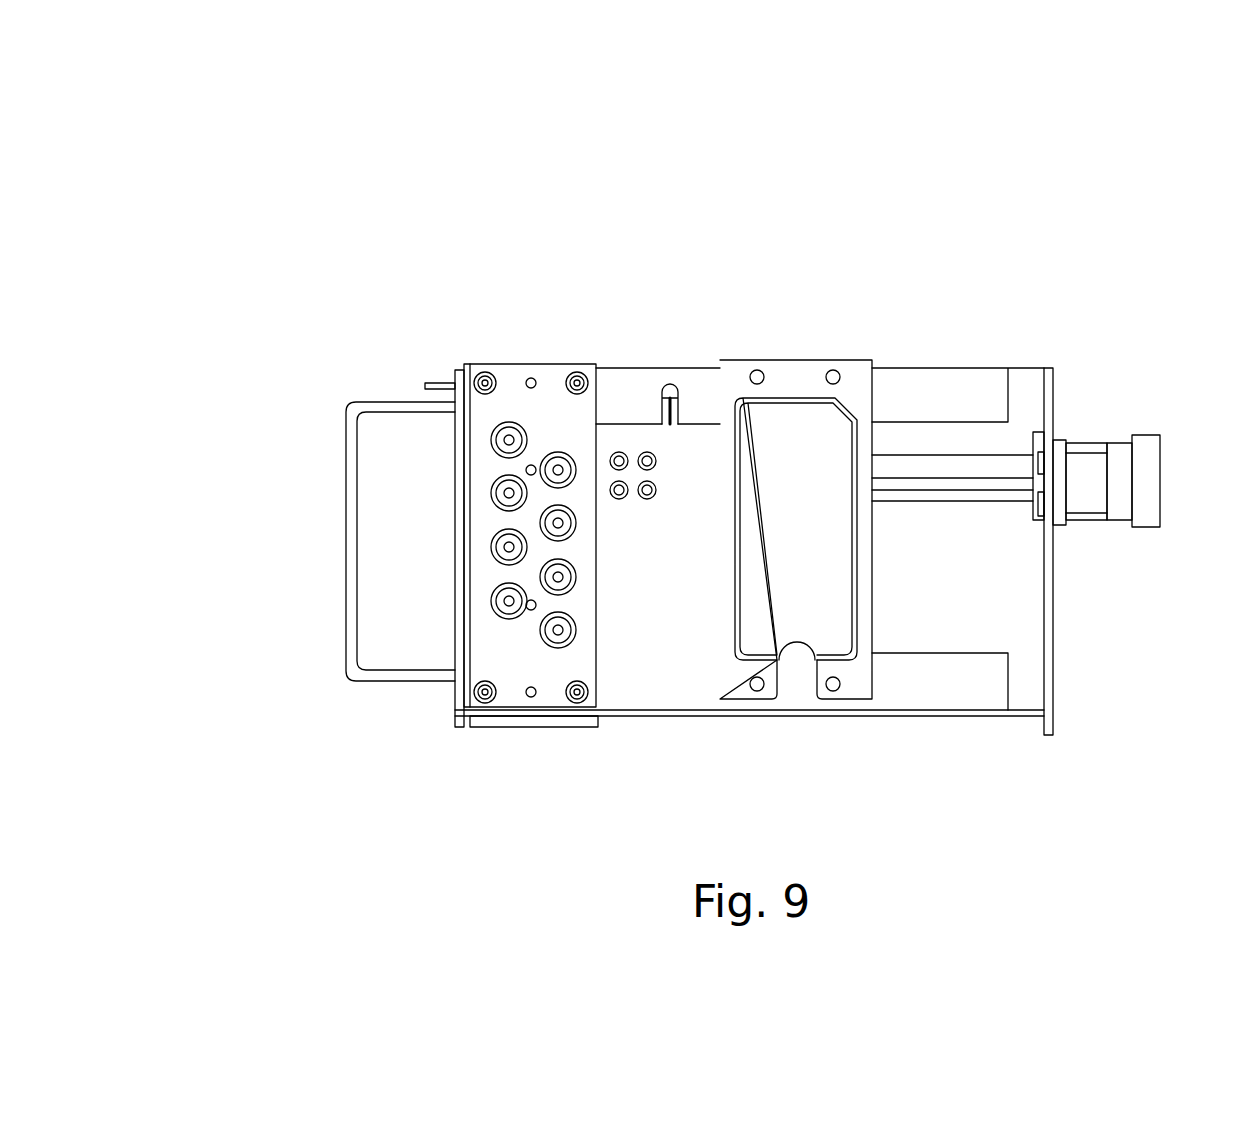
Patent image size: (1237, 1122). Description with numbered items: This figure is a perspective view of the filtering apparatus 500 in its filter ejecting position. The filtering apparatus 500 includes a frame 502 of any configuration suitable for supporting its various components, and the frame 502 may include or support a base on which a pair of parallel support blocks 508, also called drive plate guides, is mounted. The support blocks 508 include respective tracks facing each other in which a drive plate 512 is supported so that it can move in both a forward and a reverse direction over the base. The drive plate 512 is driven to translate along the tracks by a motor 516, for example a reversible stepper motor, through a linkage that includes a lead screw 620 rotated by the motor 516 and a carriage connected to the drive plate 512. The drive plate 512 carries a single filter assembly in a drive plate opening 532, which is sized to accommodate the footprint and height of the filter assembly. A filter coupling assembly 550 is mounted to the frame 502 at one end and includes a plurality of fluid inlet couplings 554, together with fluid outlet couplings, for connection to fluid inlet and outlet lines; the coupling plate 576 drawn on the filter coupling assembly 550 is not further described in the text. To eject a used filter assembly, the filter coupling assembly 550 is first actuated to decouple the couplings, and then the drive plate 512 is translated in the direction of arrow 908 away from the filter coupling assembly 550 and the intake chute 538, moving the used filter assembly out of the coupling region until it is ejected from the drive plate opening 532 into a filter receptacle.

The filtering apparatus 500 is at (932, 192).
The frame 502 is at (1057, 727).
The support blocks 508 is at (995, 366).
The drive plate 512 is at (348, 655).
The motor 516 is at (1138, 530).
The drive plate opening 532 is at (380, 470).
The intake chute 538 is at (862, 360).
The filter coupling assembly 550 is at (494, 337).
The fluid inlet couplings 554 is at (509, 606).
The manifold plate 576 is at (540, 362).
The lead screw 620 is at (985, 492).
The arrow 908 is at (297, 522).